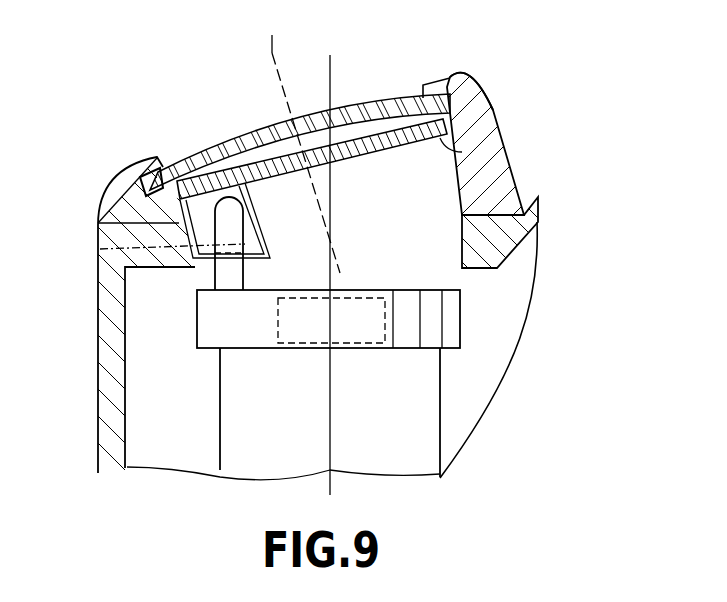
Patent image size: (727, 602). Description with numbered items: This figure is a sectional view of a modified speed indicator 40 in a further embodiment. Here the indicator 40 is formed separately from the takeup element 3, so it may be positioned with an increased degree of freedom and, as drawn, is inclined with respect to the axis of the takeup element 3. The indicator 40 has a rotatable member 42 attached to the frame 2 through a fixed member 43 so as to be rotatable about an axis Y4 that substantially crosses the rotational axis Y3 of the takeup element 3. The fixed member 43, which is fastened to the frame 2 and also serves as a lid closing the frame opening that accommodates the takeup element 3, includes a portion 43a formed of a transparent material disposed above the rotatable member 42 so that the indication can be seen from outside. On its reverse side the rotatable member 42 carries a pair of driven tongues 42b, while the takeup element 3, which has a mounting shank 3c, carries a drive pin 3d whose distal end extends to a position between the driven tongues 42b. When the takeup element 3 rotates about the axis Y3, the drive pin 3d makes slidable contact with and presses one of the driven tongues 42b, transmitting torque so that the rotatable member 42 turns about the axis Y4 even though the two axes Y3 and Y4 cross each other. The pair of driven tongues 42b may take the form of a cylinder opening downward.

The frame 2 is at (538, 210).
The takeup element 3 is at (342, 338).
The mounting shank 3c is at (228, 412).
The drive pin 3d is at (228, 272).
The indicator 40 is at (347, 303).
The rotatable member 42 is at (347, 315).
The driven tongues 42b is at (207, 241).
The fixed member 43 is at (482, 102).
The transparent portion 43a is at (248, 127).
The rotational axis of the takeup element Y3 is at (332, 62).
The rotational axis of the rotatable member Y4 is at (270, 48).